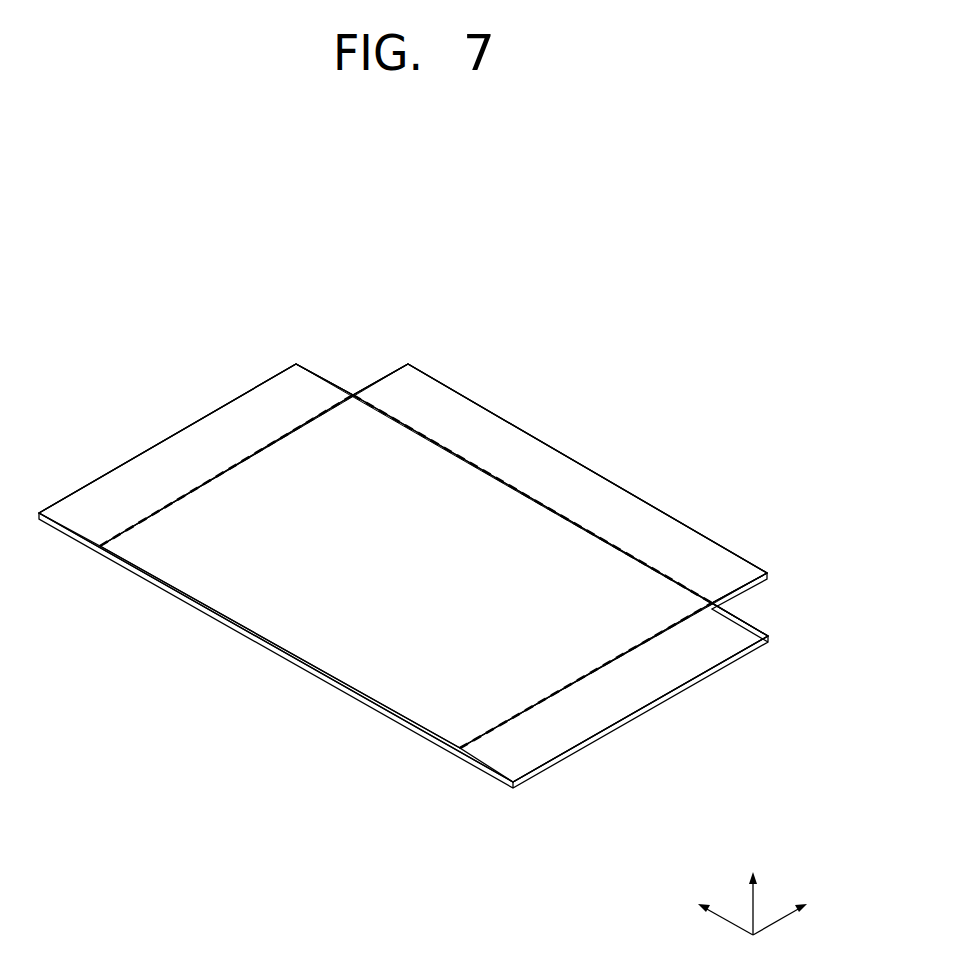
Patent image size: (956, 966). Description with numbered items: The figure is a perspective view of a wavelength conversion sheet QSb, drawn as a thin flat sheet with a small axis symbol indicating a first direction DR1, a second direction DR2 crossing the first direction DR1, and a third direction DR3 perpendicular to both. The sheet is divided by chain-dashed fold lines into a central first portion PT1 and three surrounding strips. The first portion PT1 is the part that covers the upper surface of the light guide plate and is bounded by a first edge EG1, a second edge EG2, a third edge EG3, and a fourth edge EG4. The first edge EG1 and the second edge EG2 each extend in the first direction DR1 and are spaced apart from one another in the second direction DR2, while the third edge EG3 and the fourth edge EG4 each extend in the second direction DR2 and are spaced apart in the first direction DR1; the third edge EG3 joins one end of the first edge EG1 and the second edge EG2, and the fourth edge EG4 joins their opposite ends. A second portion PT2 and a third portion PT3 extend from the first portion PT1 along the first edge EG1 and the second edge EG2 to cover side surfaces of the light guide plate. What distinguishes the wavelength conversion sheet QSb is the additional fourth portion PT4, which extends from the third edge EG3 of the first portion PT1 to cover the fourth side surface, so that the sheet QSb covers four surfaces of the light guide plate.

The first portion PT1 is at (298, 630).
The second portion PT2 is at (170, 450).
The third portion PT3 is at (615, 708).
The fourth portion PT4 is at (624, 513).
The first edge EG1 is at (240, 458).
The second edge EG2 is at (650, 637).
The third edge EG3 is at (515, 488).
The fourth edge EG4 is at (193, 602).
The wavelength conversion sheet QSb is at (768, 436).
The first direction DR1 is at (800, 912).
The second direction DR2 is at (705, 912).
The third direction DR3 is at (752, 889).